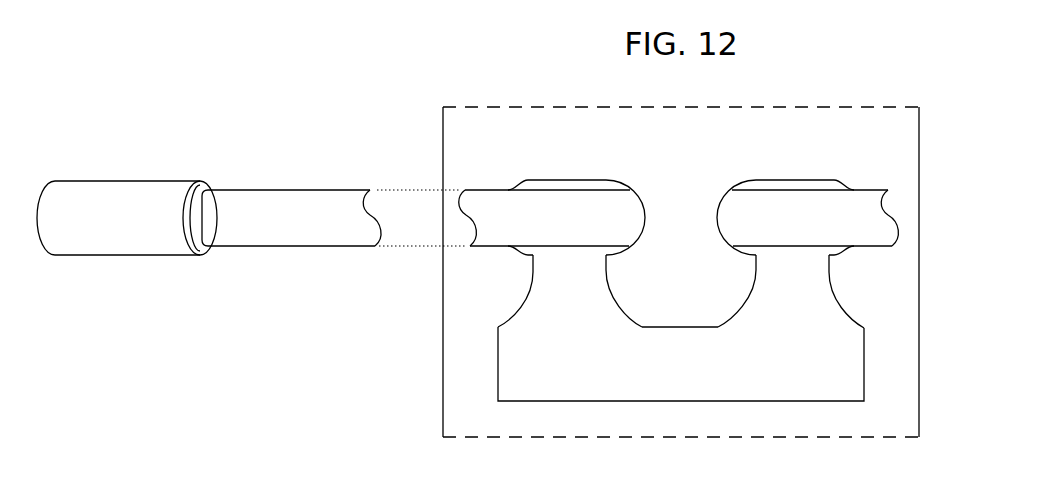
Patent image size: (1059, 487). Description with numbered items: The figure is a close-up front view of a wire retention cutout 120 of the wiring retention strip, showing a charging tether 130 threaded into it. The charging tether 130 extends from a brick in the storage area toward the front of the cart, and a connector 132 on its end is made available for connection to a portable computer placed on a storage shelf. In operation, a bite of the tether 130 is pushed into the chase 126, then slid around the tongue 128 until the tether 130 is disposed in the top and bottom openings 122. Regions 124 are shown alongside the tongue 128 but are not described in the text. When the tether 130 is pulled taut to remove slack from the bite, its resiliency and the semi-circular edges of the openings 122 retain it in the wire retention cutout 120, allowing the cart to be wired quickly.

The wire retention cutout 120 is at (819, 100).
The openings 122 is at (605, 180).
The neck portion 124 is at (553, 302).
The chase 126 is at (662, 376).
The tongue 128 is at (662, 302).
The charging tether 130 is at (269, 229).
The connector 132 is at (94, 229).